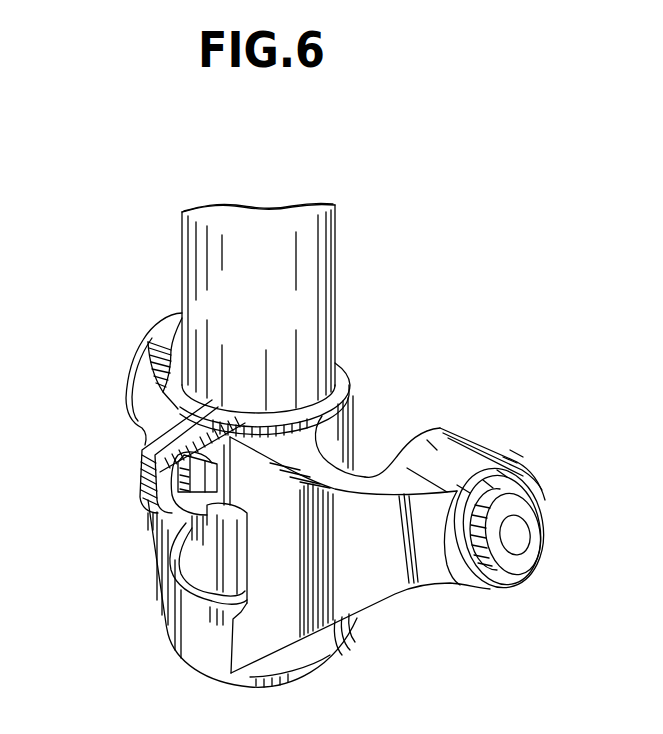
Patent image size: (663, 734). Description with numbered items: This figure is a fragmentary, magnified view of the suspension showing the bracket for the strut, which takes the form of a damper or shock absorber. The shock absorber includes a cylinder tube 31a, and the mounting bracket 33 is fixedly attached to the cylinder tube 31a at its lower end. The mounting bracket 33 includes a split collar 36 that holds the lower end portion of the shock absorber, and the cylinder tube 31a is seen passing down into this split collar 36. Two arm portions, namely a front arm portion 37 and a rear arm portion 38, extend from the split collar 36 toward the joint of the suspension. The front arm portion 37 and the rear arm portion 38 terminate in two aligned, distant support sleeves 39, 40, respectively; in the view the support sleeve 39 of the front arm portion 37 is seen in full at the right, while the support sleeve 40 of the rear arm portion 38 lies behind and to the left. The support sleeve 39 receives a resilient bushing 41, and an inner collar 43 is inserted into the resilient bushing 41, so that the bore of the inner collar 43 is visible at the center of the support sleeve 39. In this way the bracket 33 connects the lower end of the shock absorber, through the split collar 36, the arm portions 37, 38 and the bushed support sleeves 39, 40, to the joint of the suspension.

The cylinder tube 31a is at (187, 254).
The mounting bracket 33 is at (118, 508).
The split collar 36 is at (345, 372).
The front arm portion 37 is at (390, 574).
The rear arm portion 38 is at (140, 405).
The support sleeve 39 is at (477, 458).
The support sleeve 40 is at (163, 331).
The resilient bushing 41 is at (480, 570).
The inner collar 43 is at (522, 555).